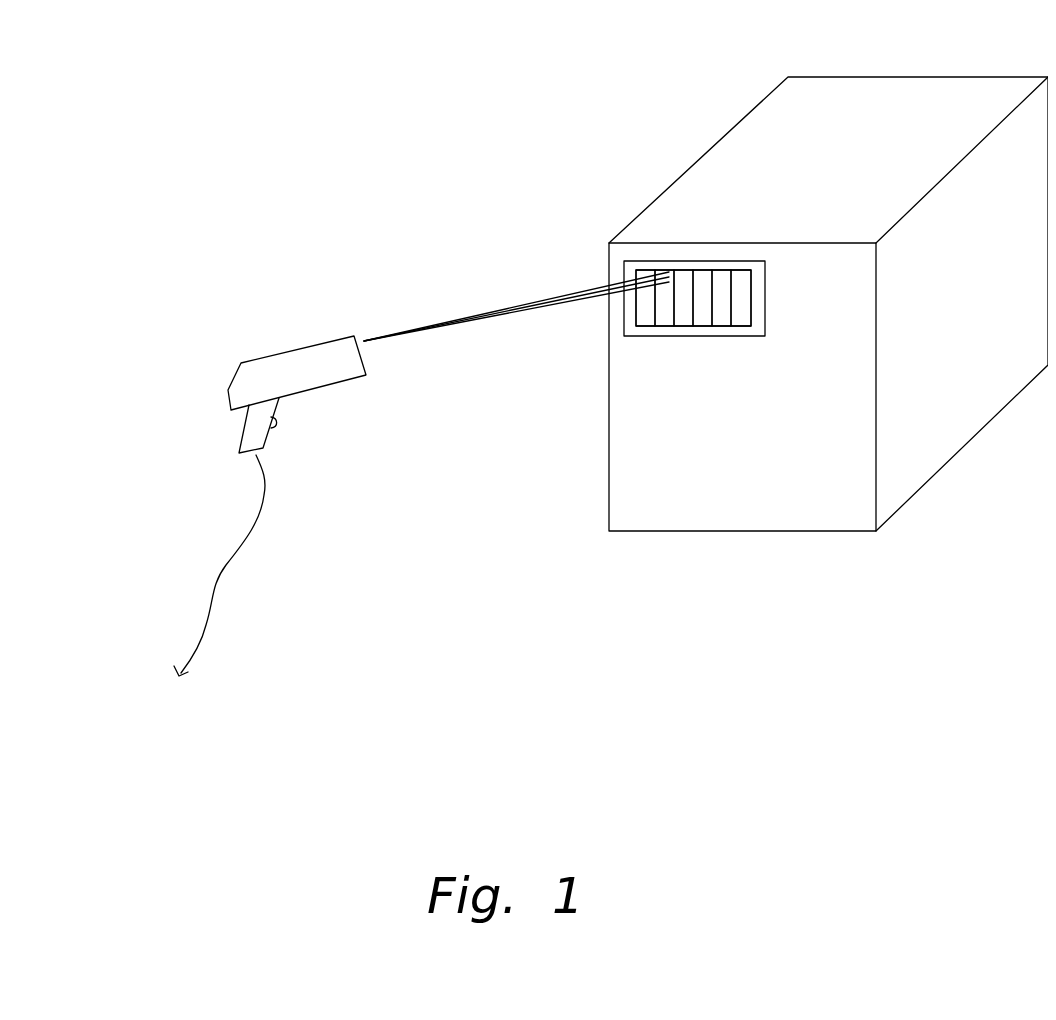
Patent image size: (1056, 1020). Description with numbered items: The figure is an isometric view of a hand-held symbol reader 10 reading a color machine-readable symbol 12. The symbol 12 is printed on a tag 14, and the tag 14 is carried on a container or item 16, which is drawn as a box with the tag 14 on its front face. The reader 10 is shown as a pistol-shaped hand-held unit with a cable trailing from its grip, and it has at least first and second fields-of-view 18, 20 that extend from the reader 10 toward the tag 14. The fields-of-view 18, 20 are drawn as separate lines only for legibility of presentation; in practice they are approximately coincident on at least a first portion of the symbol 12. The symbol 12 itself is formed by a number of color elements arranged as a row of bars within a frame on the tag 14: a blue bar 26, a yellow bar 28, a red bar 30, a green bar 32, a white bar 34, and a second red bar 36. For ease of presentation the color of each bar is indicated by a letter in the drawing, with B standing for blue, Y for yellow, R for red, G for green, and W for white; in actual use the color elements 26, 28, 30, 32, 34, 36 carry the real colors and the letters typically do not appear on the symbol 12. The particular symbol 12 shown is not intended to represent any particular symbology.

The hand-held symbol reader 10 is at (333, 404).
The color machine-readable symbol 12 is at (663, 328).
The tag 14 is at (637, 330).
The container or item 16 is at (663, 192).
The first field-of-view 18 is at (553, 310).
The second field-of-view 20 is at (537, 305).
The blue bar 26 is at (623, 272).
The yellow bar 28 is at (670, 270).
The red bar 30 is at (683, 270).
The green bar 32 is at (705, 270).
The white bar 34 is at (722, 270).
The red bar 36 is at (752, 295).